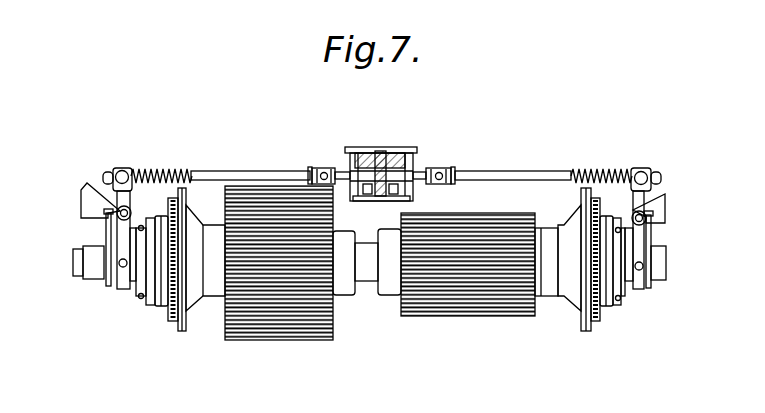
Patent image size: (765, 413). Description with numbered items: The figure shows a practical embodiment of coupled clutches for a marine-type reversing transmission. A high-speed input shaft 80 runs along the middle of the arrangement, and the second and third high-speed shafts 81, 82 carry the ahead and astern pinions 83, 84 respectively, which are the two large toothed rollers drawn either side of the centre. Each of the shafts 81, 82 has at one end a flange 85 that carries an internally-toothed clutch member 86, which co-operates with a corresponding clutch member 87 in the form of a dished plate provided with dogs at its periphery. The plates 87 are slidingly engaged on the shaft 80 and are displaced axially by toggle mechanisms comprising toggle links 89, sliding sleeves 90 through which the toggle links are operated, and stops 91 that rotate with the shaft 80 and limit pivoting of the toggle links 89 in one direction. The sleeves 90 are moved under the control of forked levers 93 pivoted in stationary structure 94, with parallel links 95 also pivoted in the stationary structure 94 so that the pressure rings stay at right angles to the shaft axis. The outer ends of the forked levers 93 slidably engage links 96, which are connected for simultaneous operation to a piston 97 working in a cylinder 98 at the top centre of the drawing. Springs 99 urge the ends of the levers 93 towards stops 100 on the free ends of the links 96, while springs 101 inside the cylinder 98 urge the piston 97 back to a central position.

The high-speed input shaft 80 is at (84, 272).
The second high-speed shaft 81 is at (540, 289).
The third high-speed shaft 82 is at (340, 290).
The ahead pinion 83 is at (470, 309).
The astern pinion 84 is at (293, 333).
The flange 85 is at (188, 300).
The internally-toothed clutch member 86 is at (175, 182).
The clutch member (dished plate) 87 is at (163, 316).
The toggle link 89 is at (134, 294).
The sliding sleeve 90 is at (120, 278).
The stop 91 is at (151, 301).
The forked lever 93 is at (120, 214).
The stationary structure 94 is at (79, 176).
The parallel link 95 is at (98, 223).
The link 96 is at (240, 162).
The piston 97 is at (373, 175).
The cylinder 98 is at (405, 152).
The spring 99 is at (152, 162).
The stop 100 is at (105, 162).
The spring 101 is at (383, 140).